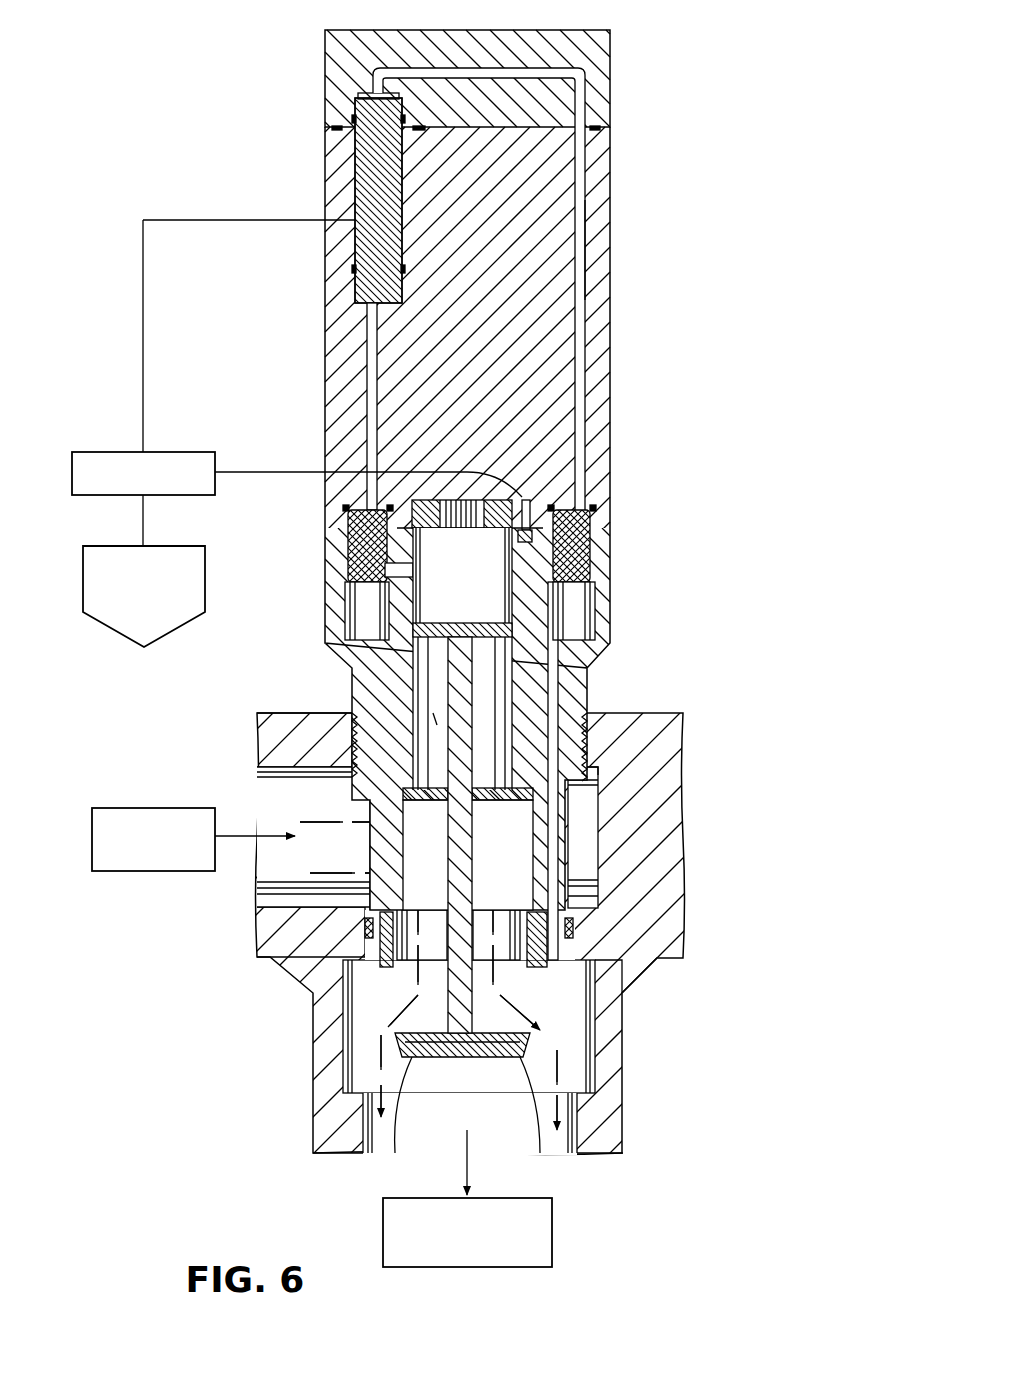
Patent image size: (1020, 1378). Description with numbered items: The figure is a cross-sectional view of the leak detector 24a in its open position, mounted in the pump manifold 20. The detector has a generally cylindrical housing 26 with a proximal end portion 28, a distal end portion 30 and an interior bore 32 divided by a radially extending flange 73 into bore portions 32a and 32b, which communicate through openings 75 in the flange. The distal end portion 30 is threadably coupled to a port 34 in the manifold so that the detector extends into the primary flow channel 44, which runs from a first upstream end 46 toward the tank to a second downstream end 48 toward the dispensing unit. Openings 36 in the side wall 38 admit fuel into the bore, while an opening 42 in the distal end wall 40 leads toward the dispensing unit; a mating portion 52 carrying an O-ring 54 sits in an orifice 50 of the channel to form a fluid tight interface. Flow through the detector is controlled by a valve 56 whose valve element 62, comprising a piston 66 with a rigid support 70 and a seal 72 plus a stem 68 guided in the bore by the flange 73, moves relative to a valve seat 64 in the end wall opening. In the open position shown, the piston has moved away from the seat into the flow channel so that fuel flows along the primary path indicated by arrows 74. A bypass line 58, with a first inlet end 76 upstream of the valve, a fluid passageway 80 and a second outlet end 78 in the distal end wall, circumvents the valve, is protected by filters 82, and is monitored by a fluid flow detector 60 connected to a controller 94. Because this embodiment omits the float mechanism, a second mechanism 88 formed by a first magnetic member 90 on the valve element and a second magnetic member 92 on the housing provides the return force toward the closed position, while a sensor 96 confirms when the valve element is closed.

The pump manifold 20 is at (683, 762).
The leak detector 24a is at (708, 72).
The housing 26 is at (325, 302).
The proximal end portion 28 is at (325, 92).
The distal end portion 30 is at (352, 700).
The interior bore 32 is at (500, 703).
The bore portion 32a is at (400, 884).
The bore portion 32b is at (440, 720).
The port 34 is at (272, 722).
The openings 36 is at (580, 862).
The side wall 38 is at (300, 808).
The distal end wall 40 is at (395, 960).
The opening 42 is at (608, 975).
The primary flow channel 44 is at (262, 774).
The first upstream end 46 is at (262, 913).
The second downstream end 48 is at (603, 1152).
The orifice 50 is at (385, 950).
The mating portion 52 is at (363, 930).
The O-ring 54 is at (585, 922).
The valve 56 is at (575, 832).
The bypass line 58 is at (588, 245).
The fluid flow detector 60 is at (350, 150).
The valve element 62 is at (475, 657).
The valve seat 64 is at (537, 970).
The piston 66 is at (445, 1060).
The stem 68 is at (447, 668).
The rigid support 70 is at (500, 1153).
The seal 72 is at (390, 1150).
The flange 73 is at (578, 755).
The arrows 74 is at (355, 1062).
The openings 75 is at (428, 780).
The first inlet end 76 is at (385, 590).
The second outlet end 78 is at (598, 1000).
The fluid passageway 80 is at (525, 75).
The filter 82 is at (348, 526).
The second mechanism 88 is at (490, 495).
The first magnetic member 90 is at (530, 600).
The second magnetic member 92 is at (415, 502).
The controller 94 is at (190, 452).
The sensor 96 is at (610, 470).